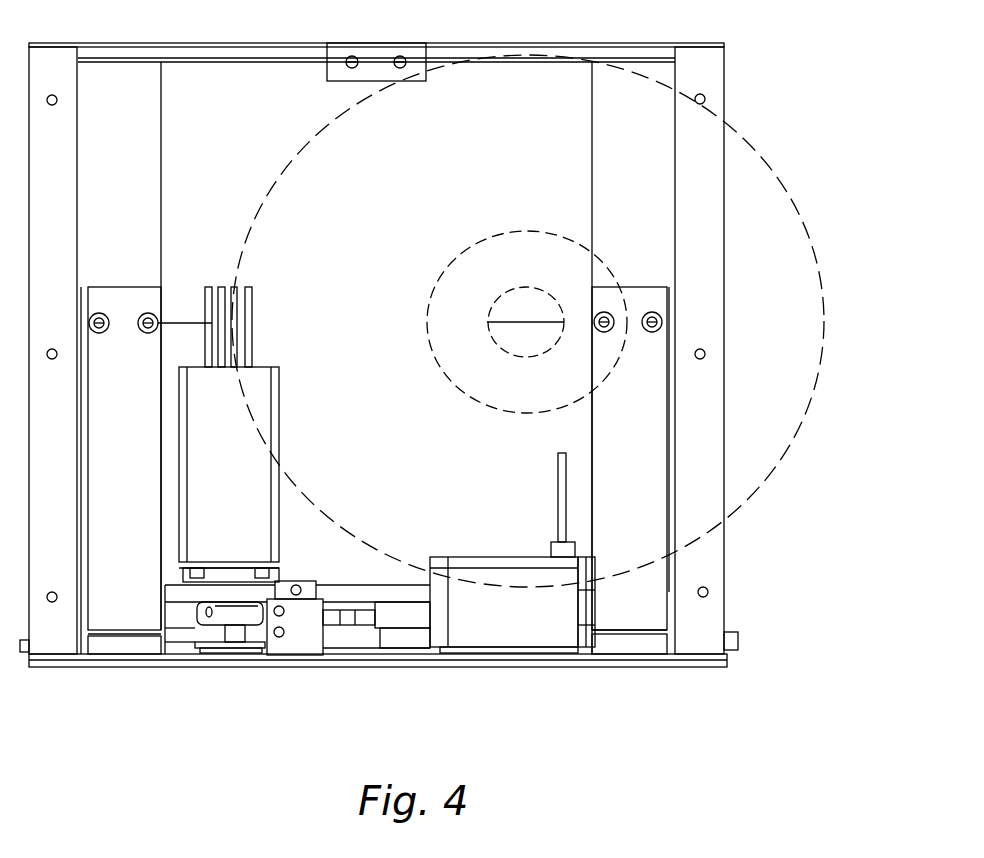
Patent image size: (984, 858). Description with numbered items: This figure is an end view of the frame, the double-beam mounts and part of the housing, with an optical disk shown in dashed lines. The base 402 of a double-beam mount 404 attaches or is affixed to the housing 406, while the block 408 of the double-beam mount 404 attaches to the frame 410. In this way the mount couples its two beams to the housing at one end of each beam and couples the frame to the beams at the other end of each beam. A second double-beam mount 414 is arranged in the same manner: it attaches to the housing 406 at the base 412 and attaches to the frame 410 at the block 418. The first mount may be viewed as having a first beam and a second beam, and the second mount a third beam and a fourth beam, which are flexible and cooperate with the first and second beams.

The base 402 is at (631, 639).
The double-beam mount 404 is at (646, 519).
The housing 406 is at (219, 660).
The block 408 is at (645, 312).
The frame 410 is at (646, 176).
The base 412 is at (118, 646).
The second double-beam mount 414 is at (142, 531).
The block 418 is at (140, 314).